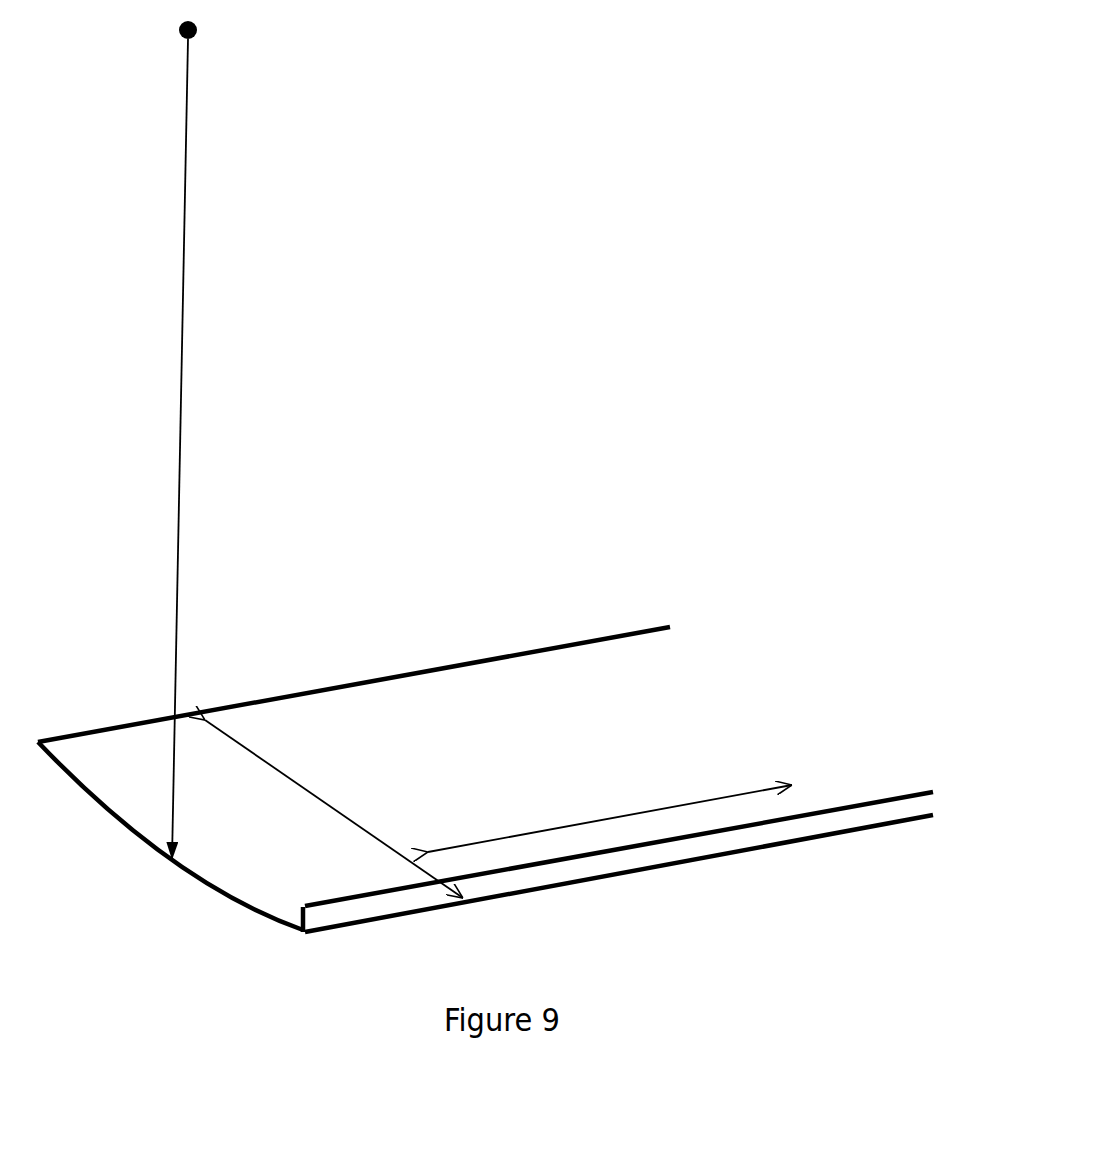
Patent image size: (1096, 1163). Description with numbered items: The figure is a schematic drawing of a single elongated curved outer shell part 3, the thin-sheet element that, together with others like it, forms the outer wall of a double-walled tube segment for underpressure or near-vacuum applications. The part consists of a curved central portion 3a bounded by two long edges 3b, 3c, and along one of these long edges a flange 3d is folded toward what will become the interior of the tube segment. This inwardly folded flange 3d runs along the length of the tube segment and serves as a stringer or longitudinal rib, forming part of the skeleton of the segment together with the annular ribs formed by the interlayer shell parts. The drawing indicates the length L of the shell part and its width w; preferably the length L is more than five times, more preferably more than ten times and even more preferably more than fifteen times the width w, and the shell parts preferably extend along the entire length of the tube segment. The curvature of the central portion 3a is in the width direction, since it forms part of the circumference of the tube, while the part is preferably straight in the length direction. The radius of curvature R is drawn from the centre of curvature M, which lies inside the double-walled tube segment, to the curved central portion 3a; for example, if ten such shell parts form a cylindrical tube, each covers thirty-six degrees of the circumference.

The elongated curved outer shell part 3 is at (485, 739).
The curved central portion 3a is at (512, 788).
The long edge 3b is at (430, 664).
The long edge 3c is at (733, 856).
The flange 3d is at (629, 868).
The centre of the radius of curvature M is at (205, 30).
The radius of curvature R is at (194, 449).
The width w is at (334, 809).
The length L is at (610, 810).